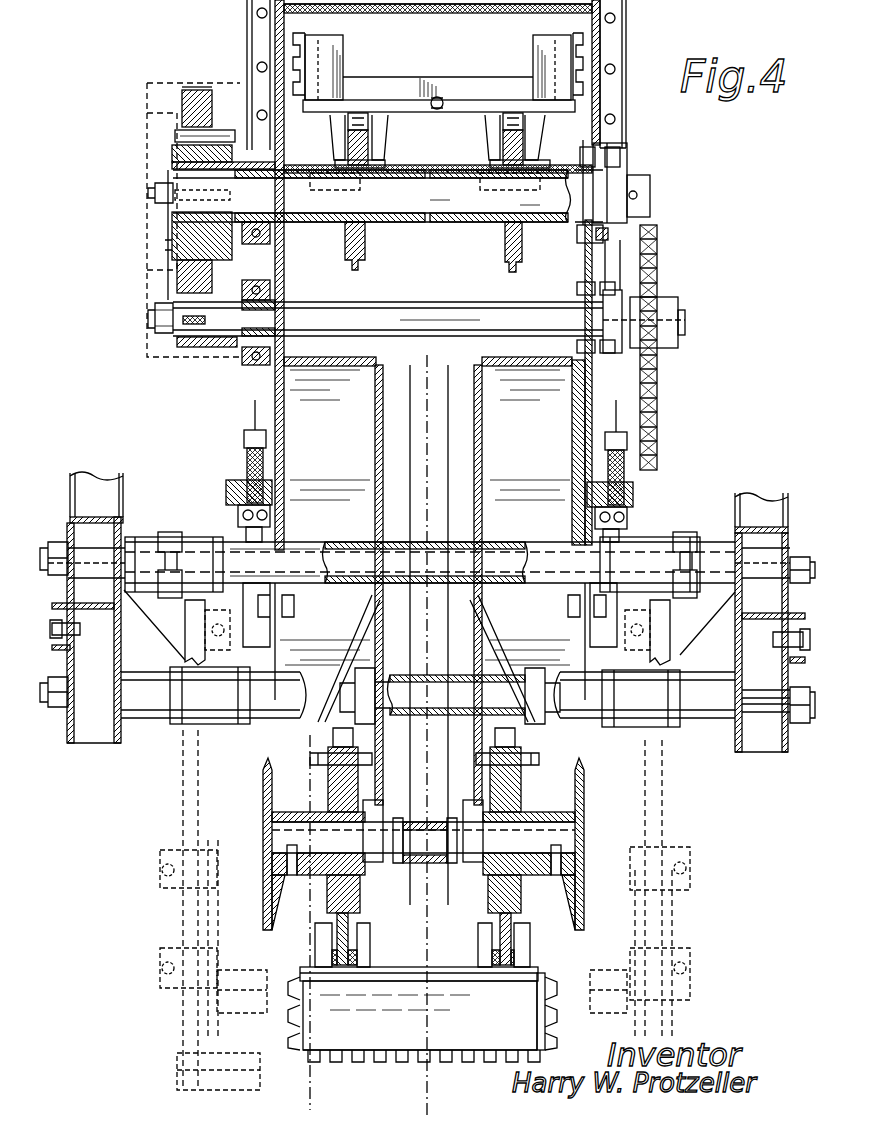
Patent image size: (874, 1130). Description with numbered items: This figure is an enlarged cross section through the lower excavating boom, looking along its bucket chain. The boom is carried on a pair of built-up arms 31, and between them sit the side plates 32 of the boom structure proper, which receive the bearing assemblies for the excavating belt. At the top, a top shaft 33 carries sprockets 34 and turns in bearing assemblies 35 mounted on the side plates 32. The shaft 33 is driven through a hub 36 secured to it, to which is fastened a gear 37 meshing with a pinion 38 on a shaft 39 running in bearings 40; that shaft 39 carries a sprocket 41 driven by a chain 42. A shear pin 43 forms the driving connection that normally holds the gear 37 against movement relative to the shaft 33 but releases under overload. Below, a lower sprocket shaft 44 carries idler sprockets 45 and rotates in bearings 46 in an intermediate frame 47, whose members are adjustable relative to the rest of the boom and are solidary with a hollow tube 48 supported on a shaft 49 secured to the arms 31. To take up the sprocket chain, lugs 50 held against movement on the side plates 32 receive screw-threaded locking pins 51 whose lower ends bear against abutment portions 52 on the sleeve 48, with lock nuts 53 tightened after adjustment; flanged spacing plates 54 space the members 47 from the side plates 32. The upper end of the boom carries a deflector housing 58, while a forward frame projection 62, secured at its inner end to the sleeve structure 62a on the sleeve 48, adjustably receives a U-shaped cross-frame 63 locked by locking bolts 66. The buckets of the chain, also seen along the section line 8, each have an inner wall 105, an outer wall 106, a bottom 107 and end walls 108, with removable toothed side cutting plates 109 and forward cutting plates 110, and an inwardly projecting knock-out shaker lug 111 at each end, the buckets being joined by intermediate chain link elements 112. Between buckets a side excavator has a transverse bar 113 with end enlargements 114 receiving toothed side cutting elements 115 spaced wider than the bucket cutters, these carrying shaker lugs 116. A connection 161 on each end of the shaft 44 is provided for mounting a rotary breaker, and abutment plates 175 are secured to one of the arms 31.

The section line 8— 8 is at (434, 474).
The arms 31 is at (85, 490).
The side plates 32 is at (272, 30).
The top shaft 33 is at (415, 205).
The sprockets 34 is at (352, 245).
The bearing assemblies 35 is at (270, 228).
The hub 36 is at (172, 216).
The gear 37 is at (192, 92).
The pinion 38 is at (192, 350).
The shaft 39 is at (390, 322).
The bearings 40 is at (270, 290).
The sprocket 41 is at (655, 282).
The chain 42 is at (658, 442).
The shear pin 43 is at (178, 136).
The lower sprocket shaft 44 is at (585, 840).
The idler sprockets 45 is at (338, 752).
The bearings 46 is at (462, 812).
The intermediate frame 47 is at (375, 443).
The hollow tube 48 is at (495, 545).
The shaft 49 is at (338, 562).
The lugs 50 is at (232, 490).
The screw-threaded locking pins 51 is at (246, 450).
The abutment portions 52 is at (243, 540).
The lock nuts 53 is at (268, 510).
The flanged spacing plates 54 is at (343, 390).
The deflector structure or housing 58 is at (475, 6).
The forward frame projection 62 is at (192, 640).
The sleeve structure 62a is at (190, 538).
The cross-frame 63 is at (235, 972).
The locking bolts 66 is at (162, 875).
The inner wall 105 is at (405, 967).
The outer wall 106 is at (455, 1052).
The bottom 107 is at (541, 1013).
The end walls 108 is at (303, 1027).
The toothed cutting plates 109 is at (290, 1040).
The toothed cutting plates 110 is at (398, 1062).
The knock-out shaker lug 111 is at (316, 950).
The intermediate chain link elements 112 is at (372, 126).
The transverse structure 113 is at (408, 75).
The end enlargements 114 is at (340, 44).
The toothed side cutting elements 115 is at (298, 36).
The shaker or knock-out lugs 116 is at (488, 138).
The connection 161 is at (265, 822).
The abutment plates 175 is at (60, 620).